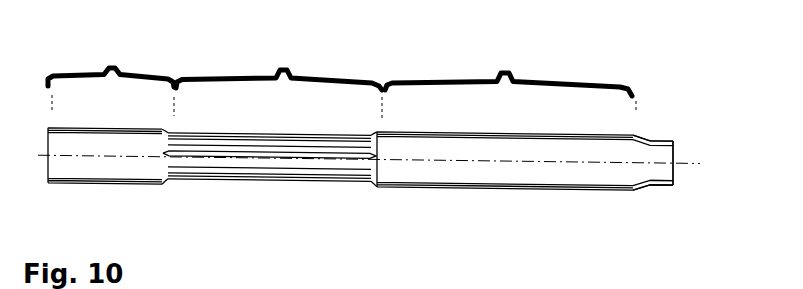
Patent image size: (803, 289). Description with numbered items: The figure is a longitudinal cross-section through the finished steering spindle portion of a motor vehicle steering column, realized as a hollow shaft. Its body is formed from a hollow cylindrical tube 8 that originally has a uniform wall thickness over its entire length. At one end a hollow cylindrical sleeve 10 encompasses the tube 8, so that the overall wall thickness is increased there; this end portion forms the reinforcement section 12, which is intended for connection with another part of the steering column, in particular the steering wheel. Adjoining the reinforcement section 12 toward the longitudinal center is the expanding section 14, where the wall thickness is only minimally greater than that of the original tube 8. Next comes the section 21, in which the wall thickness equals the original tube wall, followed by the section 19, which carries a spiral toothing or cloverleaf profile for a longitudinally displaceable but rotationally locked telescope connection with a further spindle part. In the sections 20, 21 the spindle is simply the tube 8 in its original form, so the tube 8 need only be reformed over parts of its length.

The tube 8 is at (677, 145).
The sleeve 10 is at (657, 195).
The reinforcement section 12 is at (674, 125).
The expanding section 14 is at (665, 72).
The section with profile deviating from circular form 19 is at (278, 75).
The section 20 is at (111, 71).
The section 21 is at (509, 78).